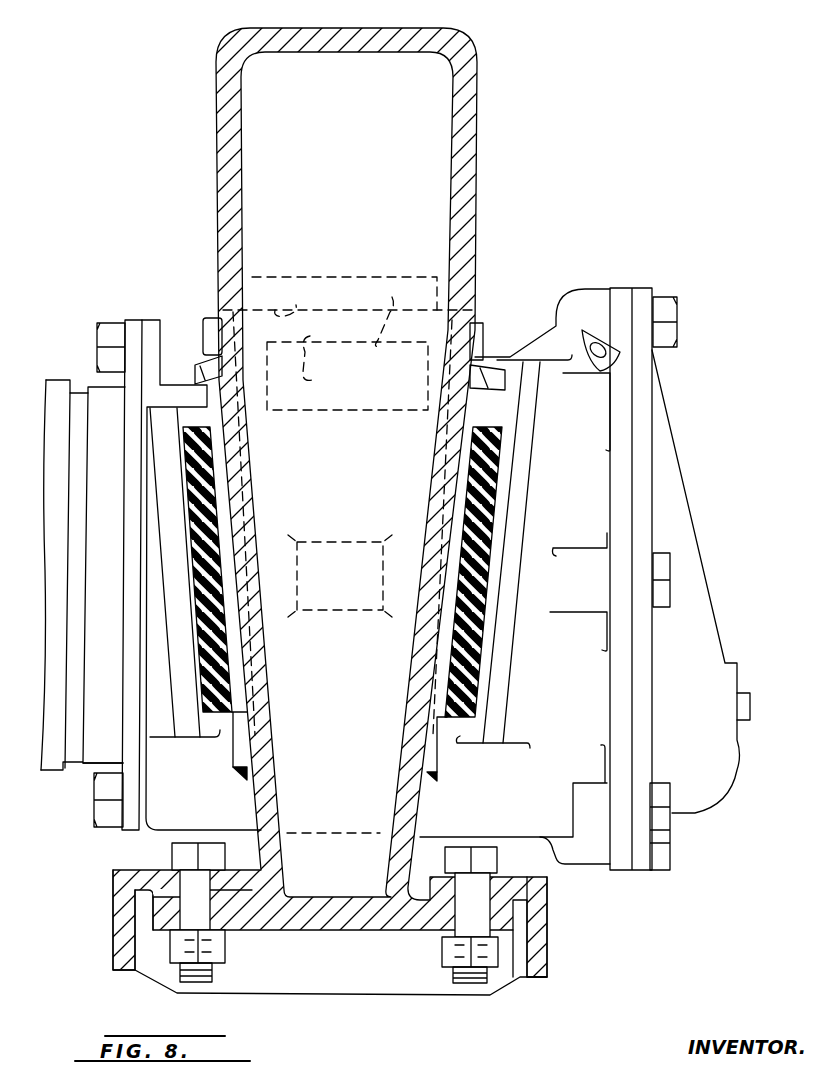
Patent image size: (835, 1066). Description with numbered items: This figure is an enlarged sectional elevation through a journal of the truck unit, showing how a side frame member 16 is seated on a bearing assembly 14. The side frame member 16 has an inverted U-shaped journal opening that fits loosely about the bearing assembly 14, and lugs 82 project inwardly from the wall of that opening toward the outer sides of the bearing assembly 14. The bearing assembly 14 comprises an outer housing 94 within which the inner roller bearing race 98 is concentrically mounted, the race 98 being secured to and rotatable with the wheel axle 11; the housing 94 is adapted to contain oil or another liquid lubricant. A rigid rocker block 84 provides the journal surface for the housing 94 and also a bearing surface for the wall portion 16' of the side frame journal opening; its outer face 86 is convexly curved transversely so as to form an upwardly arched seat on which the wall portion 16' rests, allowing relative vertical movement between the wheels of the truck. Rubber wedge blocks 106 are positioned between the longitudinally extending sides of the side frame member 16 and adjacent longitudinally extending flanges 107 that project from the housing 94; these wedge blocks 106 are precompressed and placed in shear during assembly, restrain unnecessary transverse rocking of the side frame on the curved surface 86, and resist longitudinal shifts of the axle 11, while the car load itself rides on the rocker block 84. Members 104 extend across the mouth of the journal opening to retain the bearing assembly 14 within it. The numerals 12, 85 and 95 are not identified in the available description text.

The side frame member 16 is at (330, 511).
The wall portion 16' is at (344, 280).
The rocker block 84 is at (482, 308).
The hidden connector 85 is at (377, 313).
The outer face 86 is at (296, 308).
The hidden block 95 is at (347, 373).
The lugs 82 is at (342, 540).
The frame 12 is at (55, 380).
The wheel axle 11 is at (78, 758).
The outer housing 94 is at (548, 814).
The bearing assembly 14 is at (700, 473).
The inner roller bearing race 98 is at (690, 583).
The flanges 107 is at (521, 480).
The rubber wedge blocks 106 is at (256, 688).
The members 104 is at (113, 935).